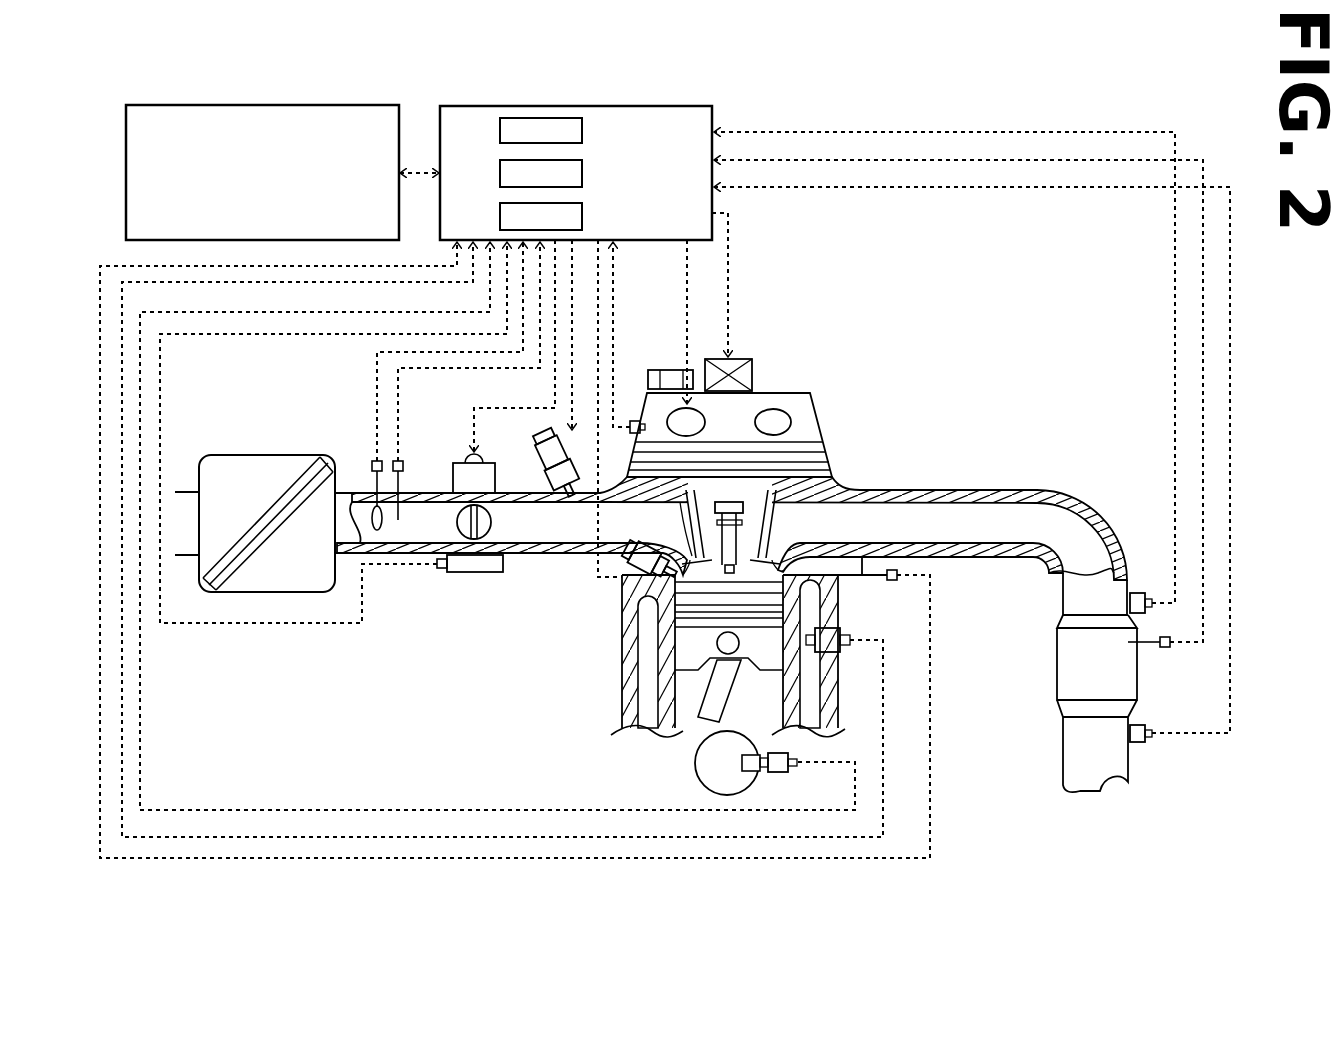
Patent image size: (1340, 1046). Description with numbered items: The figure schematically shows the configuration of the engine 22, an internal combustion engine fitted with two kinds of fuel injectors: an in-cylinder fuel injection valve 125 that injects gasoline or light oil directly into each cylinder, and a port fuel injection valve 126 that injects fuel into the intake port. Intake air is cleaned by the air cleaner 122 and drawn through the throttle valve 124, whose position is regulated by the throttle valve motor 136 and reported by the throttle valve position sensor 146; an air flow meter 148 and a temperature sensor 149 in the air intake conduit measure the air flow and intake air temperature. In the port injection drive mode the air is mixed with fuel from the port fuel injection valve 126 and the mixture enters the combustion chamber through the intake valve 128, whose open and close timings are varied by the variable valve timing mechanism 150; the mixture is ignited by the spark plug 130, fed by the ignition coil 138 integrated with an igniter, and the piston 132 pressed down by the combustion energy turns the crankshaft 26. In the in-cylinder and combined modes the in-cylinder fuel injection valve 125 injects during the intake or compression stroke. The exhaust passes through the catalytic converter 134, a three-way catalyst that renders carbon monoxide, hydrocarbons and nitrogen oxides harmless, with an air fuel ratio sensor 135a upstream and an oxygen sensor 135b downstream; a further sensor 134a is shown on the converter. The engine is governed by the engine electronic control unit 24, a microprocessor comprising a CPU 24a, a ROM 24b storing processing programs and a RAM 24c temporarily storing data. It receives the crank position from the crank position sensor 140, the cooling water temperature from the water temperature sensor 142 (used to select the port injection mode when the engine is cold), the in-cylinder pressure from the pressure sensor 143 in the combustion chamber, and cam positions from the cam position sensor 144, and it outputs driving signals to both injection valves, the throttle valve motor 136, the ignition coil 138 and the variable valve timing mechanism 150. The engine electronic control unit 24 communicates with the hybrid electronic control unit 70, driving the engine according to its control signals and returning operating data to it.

The hybrid electronic control unit 70 is at (262, 105).
The engine electronic control unit 24 is at (577, 106).
The CPU 24a is at (584, 131).
The ROM 24b is at (584, 174).
The RAM 24c is at (584, 217).
The engine 22 is at (775, 336).
The air cleaner 122 is at (267, 455).
The air flow meter 148 is at (372, 462).
The temperature sensor 149 is at (405, 462).
The throttle valve motor 136 is at (455, 462).
The throttle valve 124 is at (502, 497).
The port fuel injection valve 126 is at (537, 458).
The in-cylinder fuel injection valve 125 is at (622, 586).
The cam position sensor 144 is at (633, 420).
The ignition coil 138 is at (752, 376).
The variable valve timing mechanism 150 is at (822, 435).
The intake valve 128 is at (690, 548).
The spark plug 130 is at (777, 550).
The throttle valve position sensor 146 is at (480, 572).
The piston 132 is at (697, 640).
The crankshaft 26 is at (695, 762).
The crank position sensor 140 is at (782, 775).
The water temperature sensor 142 is at (840, 628).
The pressure sensor 143 is at (900, 574).
The catalytic converter 134 is at (1070, 650).
The temperature sensor 134a is at (1165, 650).
The air fuel ratio sensor 135a is at (1138, 593).
The oxygen sensor 135b is at (1147, 745).